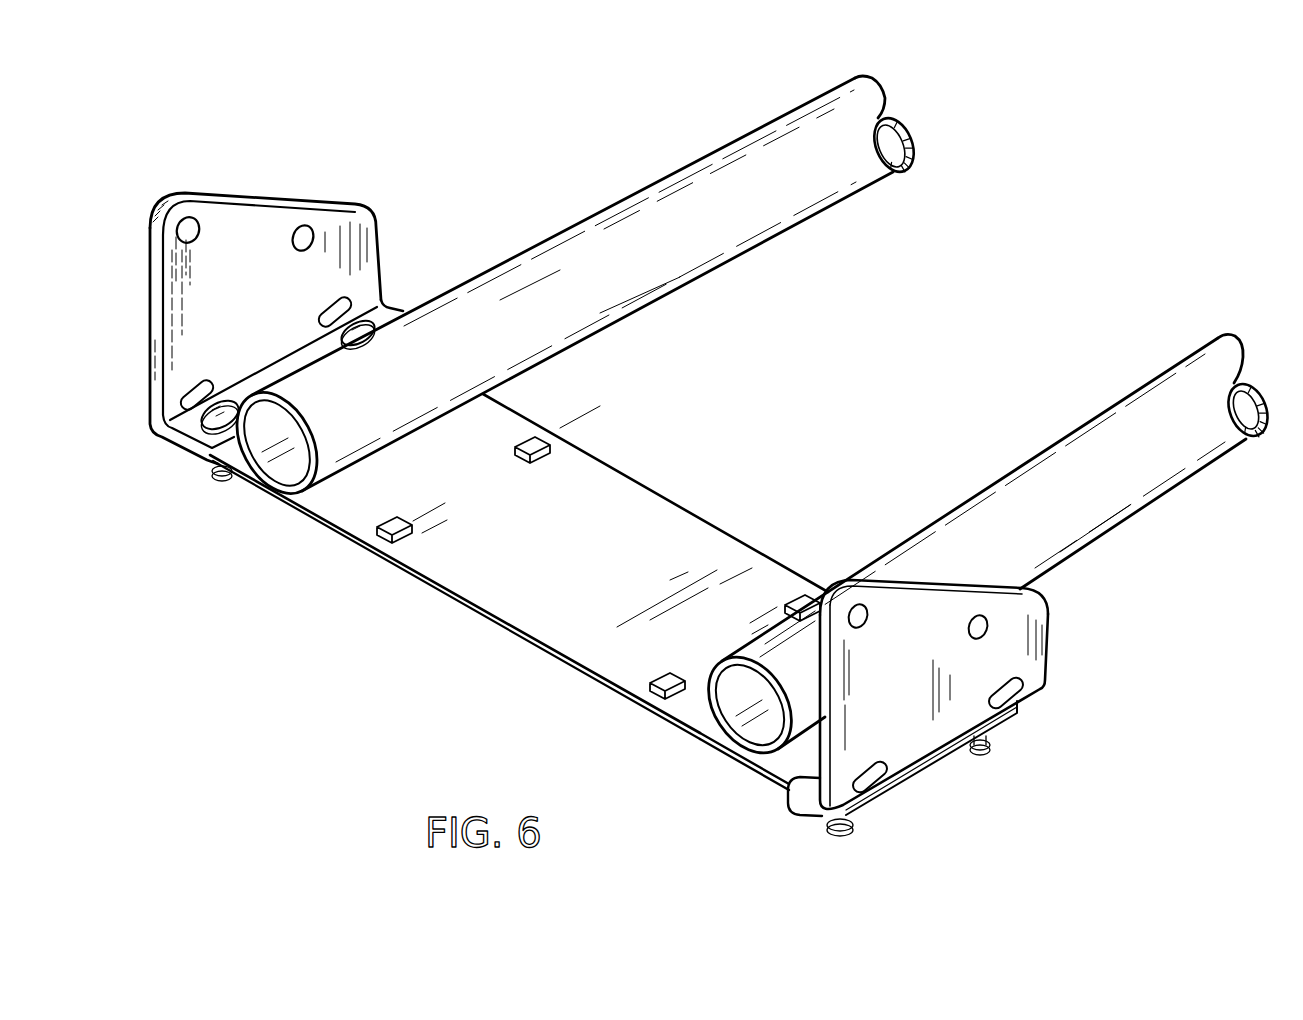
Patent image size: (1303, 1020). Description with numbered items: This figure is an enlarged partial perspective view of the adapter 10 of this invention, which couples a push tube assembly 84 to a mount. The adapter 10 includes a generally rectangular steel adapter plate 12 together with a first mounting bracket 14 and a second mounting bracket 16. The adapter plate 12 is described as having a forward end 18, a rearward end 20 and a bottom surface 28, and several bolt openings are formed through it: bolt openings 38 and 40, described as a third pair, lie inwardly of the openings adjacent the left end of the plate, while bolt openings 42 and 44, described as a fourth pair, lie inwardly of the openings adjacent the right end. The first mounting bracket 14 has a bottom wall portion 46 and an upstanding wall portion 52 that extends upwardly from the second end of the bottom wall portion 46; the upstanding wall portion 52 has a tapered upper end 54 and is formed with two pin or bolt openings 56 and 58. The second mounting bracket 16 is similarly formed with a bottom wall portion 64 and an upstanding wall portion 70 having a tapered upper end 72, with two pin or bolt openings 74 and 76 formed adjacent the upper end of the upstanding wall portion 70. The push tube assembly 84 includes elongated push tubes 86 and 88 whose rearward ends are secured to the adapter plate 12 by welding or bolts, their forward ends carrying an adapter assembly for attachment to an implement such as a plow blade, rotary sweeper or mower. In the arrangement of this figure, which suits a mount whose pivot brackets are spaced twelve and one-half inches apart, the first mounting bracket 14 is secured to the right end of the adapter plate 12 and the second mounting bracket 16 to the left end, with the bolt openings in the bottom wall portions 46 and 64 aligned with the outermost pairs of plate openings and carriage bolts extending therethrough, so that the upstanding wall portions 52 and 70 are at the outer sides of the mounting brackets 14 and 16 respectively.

The adapter 10 is at (425, 238).
The adapter plate 12 is at (698, 498).
The first mounting bracket 14 is at (1058, 657).
The second mounting bracket 16 is at (357, 182).
The forward end 18 is at (583, 450).
The rearward end 20 is at (470, 613).
The bottom surface 28 is at (560, 683).
The bolt opening 38 is at (537, 443).
The bolt opening 40 is at (380, 532).
The bolt opening 42 is at (797, 600).
The bolt opening 44 is at (653, 683).
The bottom wall portion 46 is at (788, 786).
The upstanding wall portion 52 is at (1012, 653).
The tapered upper end 54 is at (957, 587).
The bolt opening or pin opening 56 is at (860, 613).
The bolt opening or pin opening 58 is at (987, 622).
The bottom wall portion 64 is at (388, 307).
The upstanding wall portion 70 is at (202, 330).
The tapered upper end 72 is at (267, 195).
The pin opening or bolt opening 74 is at (188, 228).
The pin opening or bolt opening 76 is at (303, 237).
The push tube assembly 84 is at (728, 132).
The push tube 86 is at (1188, 462).
The push tube 88 is at (737, 227).